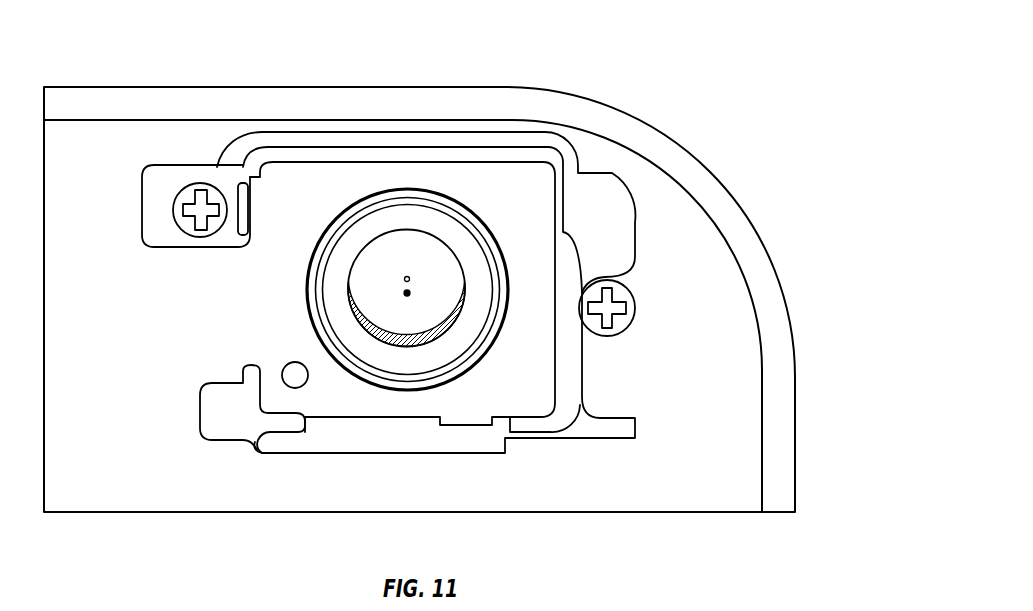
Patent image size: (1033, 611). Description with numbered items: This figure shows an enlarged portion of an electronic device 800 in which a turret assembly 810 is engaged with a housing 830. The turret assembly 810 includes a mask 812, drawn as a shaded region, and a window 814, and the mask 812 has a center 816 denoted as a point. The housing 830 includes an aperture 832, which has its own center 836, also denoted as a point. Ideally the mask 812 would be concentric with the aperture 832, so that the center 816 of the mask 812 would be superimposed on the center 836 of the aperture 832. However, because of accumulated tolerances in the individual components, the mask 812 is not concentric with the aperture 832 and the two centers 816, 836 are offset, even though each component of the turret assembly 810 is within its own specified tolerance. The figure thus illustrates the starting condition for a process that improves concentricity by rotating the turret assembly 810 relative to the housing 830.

The electronic device 800 is at (733, 82).
The turret assembly 810 is at (474, 202).
The mask 812 is at (447, 333).
The window 814 is at (406, 259).
The center 816 is at (404, 278).
The housing 830 is at (93, 402).
The aperture 832 is at (450, 385).
The center 836 is at (407, 293).